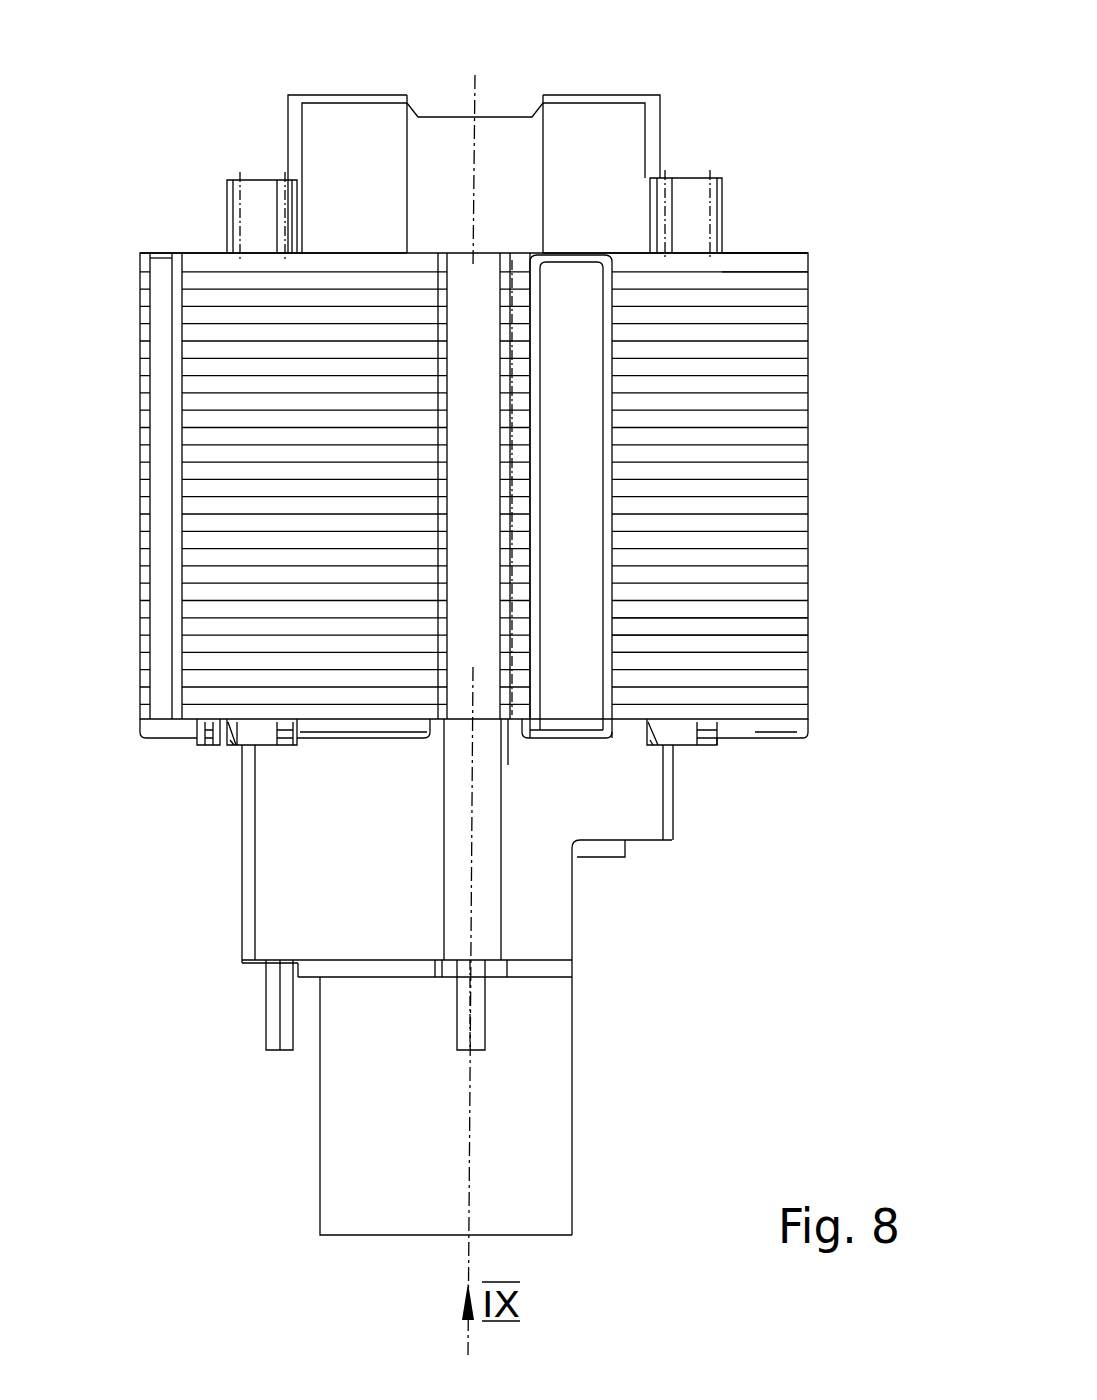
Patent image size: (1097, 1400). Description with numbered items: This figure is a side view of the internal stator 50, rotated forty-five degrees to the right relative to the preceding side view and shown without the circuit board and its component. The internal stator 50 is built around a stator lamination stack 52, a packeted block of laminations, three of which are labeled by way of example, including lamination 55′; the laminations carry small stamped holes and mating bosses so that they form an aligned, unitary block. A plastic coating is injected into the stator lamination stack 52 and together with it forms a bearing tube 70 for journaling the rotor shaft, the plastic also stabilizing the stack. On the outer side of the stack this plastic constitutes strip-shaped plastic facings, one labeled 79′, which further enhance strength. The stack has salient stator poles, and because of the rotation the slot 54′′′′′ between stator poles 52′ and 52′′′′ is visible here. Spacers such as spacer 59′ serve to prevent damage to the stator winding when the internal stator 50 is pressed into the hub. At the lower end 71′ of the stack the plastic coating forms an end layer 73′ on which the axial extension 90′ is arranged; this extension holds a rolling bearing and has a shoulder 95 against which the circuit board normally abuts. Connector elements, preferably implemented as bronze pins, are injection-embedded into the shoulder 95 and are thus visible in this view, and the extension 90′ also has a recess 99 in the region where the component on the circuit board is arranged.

The internal stator 50 is at (506, 653).
The stator lamination stack 52 is at (820, 288).
The stator pole 52′ is at (688, 250).
The stator pole 52′′′′ is at (201, 252).
The rotor yoke 54′′′′′ is at (460, 250).
The lamination 55′ is at (795, 622).
The spacer 59′ is at (257, 190).
The bearing tube 70 is at (378, 1237).
The lower end of stator lamination stack 71′ is at (697, 722).
The end layer 73′ is at (790, 730).
The plastic facing 79′ is at (163, 745).
The plastic part / first axial extension 90′ is at (557, 1000).
The shoulder 95 is at (335, 958).
The recess 99 is at (598, 880).